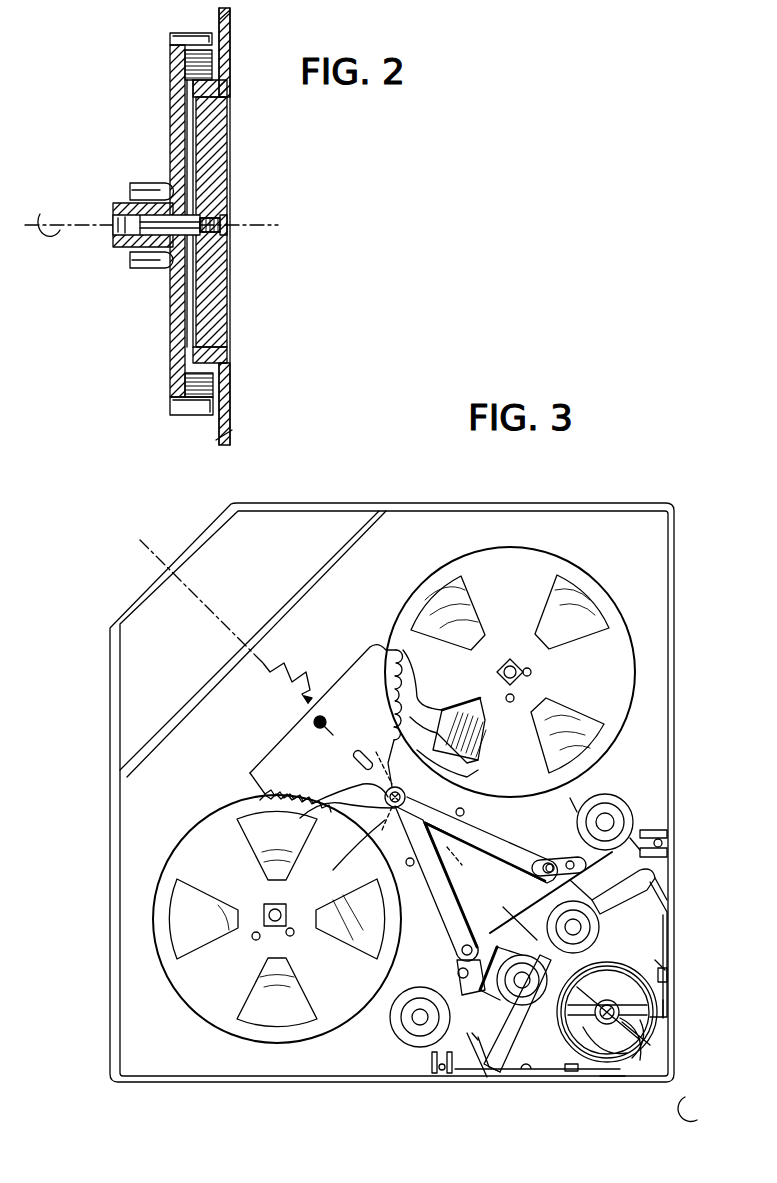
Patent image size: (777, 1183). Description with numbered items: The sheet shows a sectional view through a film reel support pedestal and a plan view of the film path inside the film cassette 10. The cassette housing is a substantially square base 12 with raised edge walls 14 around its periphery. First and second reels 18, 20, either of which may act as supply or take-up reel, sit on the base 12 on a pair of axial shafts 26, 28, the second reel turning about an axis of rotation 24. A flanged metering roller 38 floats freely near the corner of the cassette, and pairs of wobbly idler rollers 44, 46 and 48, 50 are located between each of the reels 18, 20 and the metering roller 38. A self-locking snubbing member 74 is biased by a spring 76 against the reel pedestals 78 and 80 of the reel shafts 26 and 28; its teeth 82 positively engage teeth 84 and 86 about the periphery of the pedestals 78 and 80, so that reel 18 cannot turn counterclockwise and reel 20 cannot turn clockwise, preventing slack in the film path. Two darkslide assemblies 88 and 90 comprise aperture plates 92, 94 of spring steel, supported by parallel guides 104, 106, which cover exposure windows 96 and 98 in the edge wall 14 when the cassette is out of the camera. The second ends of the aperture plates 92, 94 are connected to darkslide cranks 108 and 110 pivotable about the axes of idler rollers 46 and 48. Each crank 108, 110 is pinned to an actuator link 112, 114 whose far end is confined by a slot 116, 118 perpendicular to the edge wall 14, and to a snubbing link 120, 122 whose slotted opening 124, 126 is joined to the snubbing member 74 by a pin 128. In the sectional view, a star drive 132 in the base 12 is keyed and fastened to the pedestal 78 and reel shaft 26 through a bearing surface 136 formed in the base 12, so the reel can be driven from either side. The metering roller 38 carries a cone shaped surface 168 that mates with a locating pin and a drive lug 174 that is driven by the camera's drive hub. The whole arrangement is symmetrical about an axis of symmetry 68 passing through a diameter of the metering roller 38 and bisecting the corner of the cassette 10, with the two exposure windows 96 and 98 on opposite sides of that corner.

In FIG. 3, the film cassette 10 is at (566, 498).
In FIG. 2, the base 12 is at (219, 20).
In FIG. 3, the base 12 is at (374, 588).
In FIG. 3, the edge walls 14 is at (455, 501).
In FIG. 3, the first reel 18 is at (512, 594).
In FIG. 3, the second reel 20 is at (328, 969).
In FIG. 2, the axis of rotation 24 is at (52, 212).
In FIG. 3, the axial shaft 26 is at (510, 659).
In FIG. 2, the axial shaft 28 is at (122, 240).
In FIG. 3, the axial shaft 28 is at (263, 915).
In FIG. 3, the metering roller 38 is at (633, 1085).
In FIG. 3, the idler roller 44 is at (618, 805).
In FIG. 3, the idler roller 46 is at (550, 925).
In FIG. 3, the idler roller 48 is at (500, 953).
In FIG. 3, the idler roller 50 is at (392, 1020).
In FIG. 3, the axis of symmetry 68 is at (697, 1120).
In FIG. 3, the snubbing member 74 is at (340, 690).
In FIG. 3, the spring 76 is at (290, 683).
In FIG. 3, the reel pedestal 78 is at (441, 707).
In FIG. 2, the reel pedestal 80 is at (172, 93).
In FIG. 3, the reel pedestal 80 is at (262, 797).
In FIG. 3, the teeth 82 is at (393, 690).
In FIG. 3, the teeth 84 is at (468, 761).
In FIG. 2, the teeth 86 is at (167, 33).
In FIG. 3, the teeth 86 is at (320, 804).
In FIG. 3, the darkslide assembly 88 is at (648, 963).
In FIG. 3, the darkslide assembly 90 is at (560, 1058).
In FIG. 3, the aperture plate 92 is at (661, 945).
In FIG. 3, the aperture plate 94 is at (530, 1073).
In FIG. 3, the exposure window 96 is at (672, 1008).
In FIG. 3, the exposure window 98 is at (612, 1082).
In FIG. 3, the guide 104 is at (668, 975).
In FIG. 3, the guide 106 is at (570, 1077).
In FIG. 3, the darkslide crank 108 is at (652, 871).
In FIG. 3, the darkslide crank 110 is at (472, 1062).
In FIG. 3, the actuator link 112 is at (578, 856).
In FIG. 3, the actuator link 114 is at (430, 972).
In FIG. 3, the slot 116 is at (667, 841).
In FIG. 3, the slot 118 is at (445, 1080).
In FIG. 3, the snubbing link 120 is at (487, 837).
In FIG. 3, the snubbing link 122 is at (452, 890).
In FIG. 3, the slotted opening 124 is at (367, 755).
In FIG. 3, the slotted opening 126 is at (400, 787).
In FIG. 3, the pin 128 is at (388, 815).
In FIG. 2, the star drive 132 is at (233, 143).
In FIG. 2, the bearing surface 136 is at (222, 243).
In FIG. 3, the cone shaped surface 168 is at (648, 1018).
In FIG. 3, the drive lug 174 is at (653, 1040).